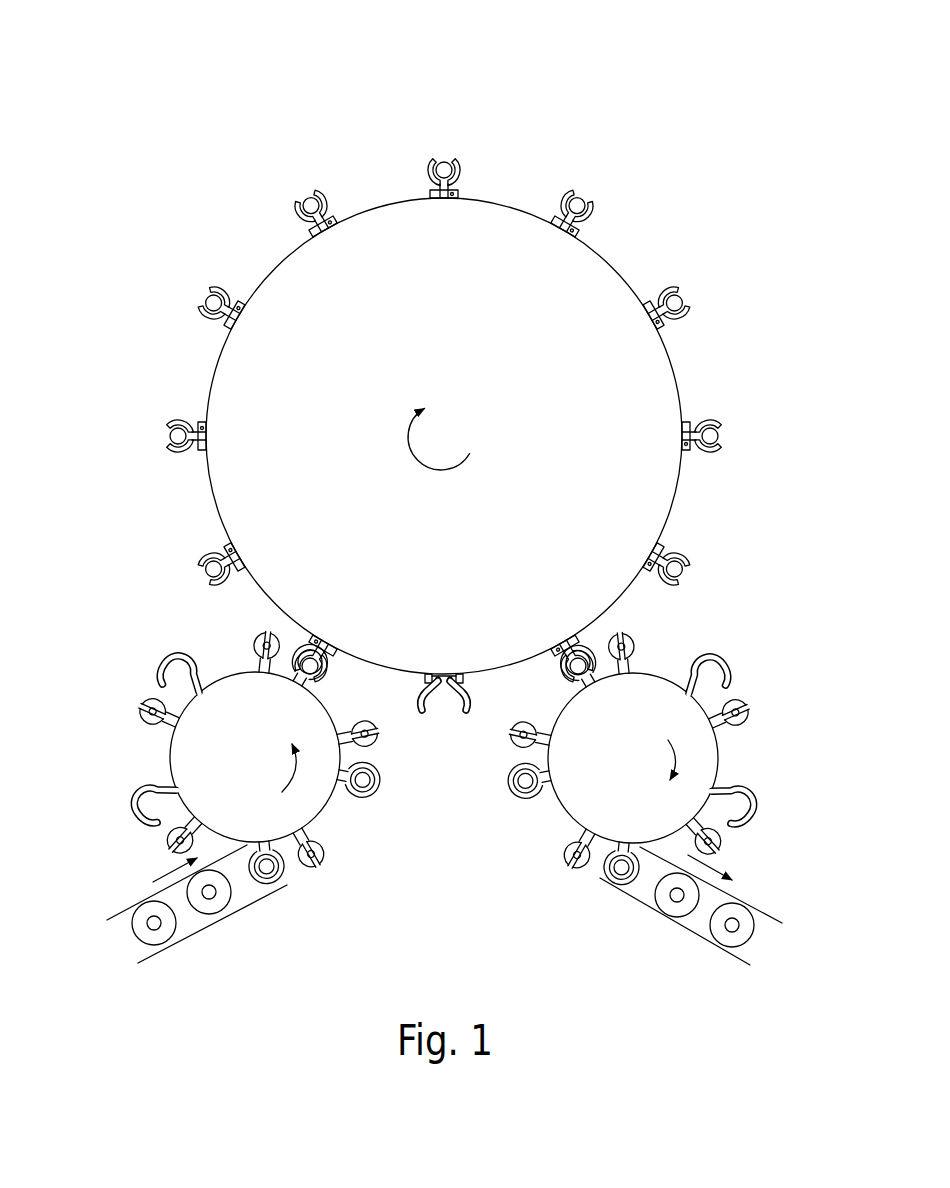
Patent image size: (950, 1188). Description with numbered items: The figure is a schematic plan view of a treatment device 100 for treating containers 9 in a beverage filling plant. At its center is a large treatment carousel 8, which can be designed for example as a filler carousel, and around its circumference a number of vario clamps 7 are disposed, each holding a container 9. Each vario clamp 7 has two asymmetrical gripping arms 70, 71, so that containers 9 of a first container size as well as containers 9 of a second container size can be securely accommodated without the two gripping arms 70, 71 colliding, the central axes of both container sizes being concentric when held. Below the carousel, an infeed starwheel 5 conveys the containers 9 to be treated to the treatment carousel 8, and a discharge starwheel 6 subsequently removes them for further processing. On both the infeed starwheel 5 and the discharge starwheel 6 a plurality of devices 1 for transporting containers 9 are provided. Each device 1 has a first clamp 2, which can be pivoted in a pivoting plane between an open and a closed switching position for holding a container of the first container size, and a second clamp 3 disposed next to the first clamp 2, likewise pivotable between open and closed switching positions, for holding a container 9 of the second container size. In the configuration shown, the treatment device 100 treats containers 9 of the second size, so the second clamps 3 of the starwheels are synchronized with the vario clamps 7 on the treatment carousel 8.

The treatment device 100 is at (130, 88).
The device for transporting containers 1 is at (142, 667).
The first clamp 2 is at (270, 648).
The second clamp 3 is at (198, 665).
The infeed starwheel 5 is at (325, 800).
The discharge starwheel 6 is at (712, 755).
The vario clamp 7 is at (446, 428).
The treatment carousel 8 is at (400, 225).
The container 9 is at (313, 207).
The gripping arm 70 is at (427, 675).
The gripping arm 71 is at (465, 675).